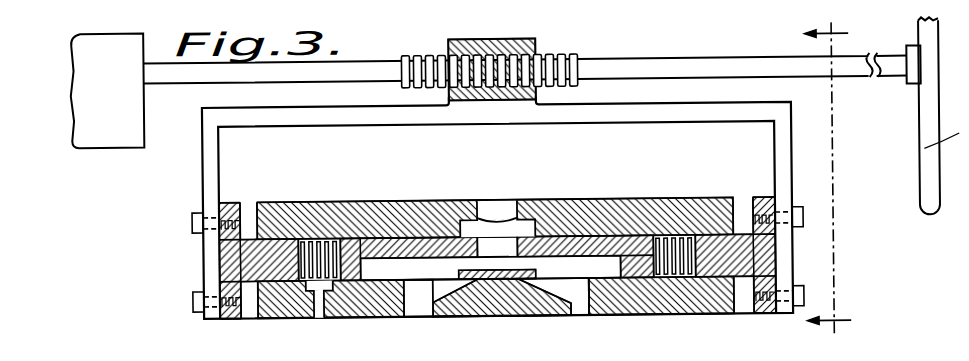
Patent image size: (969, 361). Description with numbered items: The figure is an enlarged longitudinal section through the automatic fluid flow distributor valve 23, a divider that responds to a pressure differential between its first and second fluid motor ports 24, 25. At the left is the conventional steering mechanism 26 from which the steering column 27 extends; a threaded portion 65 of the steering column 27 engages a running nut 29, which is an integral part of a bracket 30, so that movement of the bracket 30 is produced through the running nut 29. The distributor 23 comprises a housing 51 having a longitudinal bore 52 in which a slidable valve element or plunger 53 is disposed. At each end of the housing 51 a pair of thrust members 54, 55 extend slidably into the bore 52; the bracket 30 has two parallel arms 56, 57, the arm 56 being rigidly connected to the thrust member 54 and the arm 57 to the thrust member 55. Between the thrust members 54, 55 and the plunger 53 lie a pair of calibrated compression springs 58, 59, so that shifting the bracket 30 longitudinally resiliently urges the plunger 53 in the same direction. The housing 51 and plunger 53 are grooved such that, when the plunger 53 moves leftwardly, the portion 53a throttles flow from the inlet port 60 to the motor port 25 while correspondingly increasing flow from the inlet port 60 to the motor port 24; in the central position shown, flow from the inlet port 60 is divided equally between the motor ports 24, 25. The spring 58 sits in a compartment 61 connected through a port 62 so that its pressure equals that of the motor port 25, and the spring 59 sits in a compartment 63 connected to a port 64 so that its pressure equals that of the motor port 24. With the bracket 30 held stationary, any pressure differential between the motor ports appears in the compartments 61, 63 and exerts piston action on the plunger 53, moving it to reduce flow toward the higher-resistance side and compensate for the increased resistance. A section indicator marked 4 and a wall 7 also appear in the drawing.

The section line 4- 4 is at (837, 178).
The frame wall 7 is at (940, 53).
The automatic fluid flow distributor valve 23 is at (630, 204).
The first fluid motor port 24 is at (572, 322).
The second fluid motor port 25 is at (419, 321).
The steering mechanism 26 is at (119, 131).
The steering column 27 is at (751, 37).
The running nut 29 is at (537, 44).
The bracket 30 is at (749, 131).
The housing 51 is at (367, 204).
The longitudinal bore 52 is at (383, 276).
The plunger 53 is at (572, 262).
The portion of the plunger 53a is at (538, 276).
The thrust member 54 is at (244, 246).
The thrust member 55 is at (716, 247).
The arm 56 is at (203, 186).
The arm 57 is at (792, 161).
The calibrated compression spring 58 is at (312, 241).
The calibrated compression spring 59 is at (670, 240).
The inlet port 60 is at (502, 210).
The compartment 61 is at (343, 204).
The port 62 is at (318, 320).
The compartment 63 is at (687, 240).
The port 64 is at (674, 322).
The threaded portion 65 is at (582, 64).